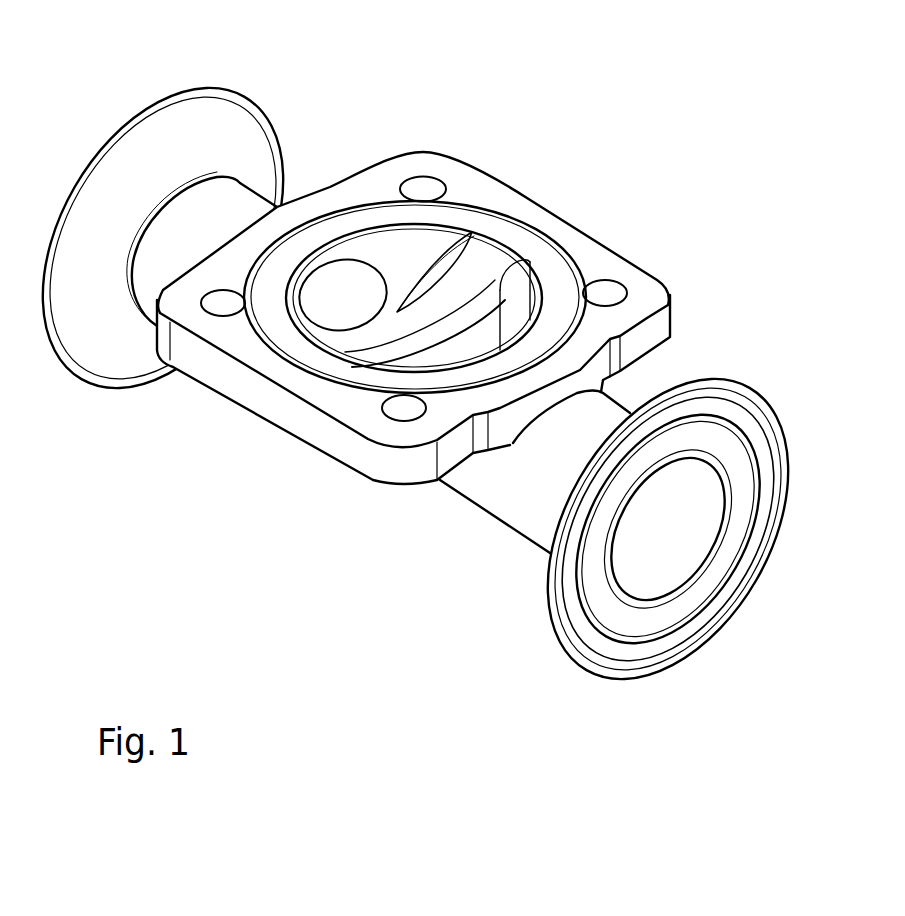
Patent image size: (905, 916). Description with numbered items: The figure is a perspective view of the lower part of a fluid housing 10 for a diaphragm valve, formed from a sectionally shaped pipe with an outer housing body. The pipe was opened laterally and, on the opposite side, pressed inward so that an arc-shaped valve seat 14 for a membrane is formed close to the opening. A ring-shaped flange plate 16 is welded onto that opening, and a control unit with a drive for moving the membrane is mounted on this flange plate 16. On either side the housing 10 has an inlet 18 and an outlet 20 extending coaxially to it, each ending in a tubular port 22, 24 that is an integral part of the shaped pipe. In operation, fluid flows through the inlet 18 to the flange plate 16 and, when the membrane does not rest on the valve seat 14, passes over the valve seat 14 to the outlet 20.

The fluid housing 10 is at (630, 233).
The valve seat 14 is at (490, 262).
The flange plate 16 is at (368, 408).
The inlet 18 is at (207, 224).
The outlet 20 is at (593, 427).
The tubular port 22 is at (152, 290).
The tubular port 24 is at (520, 507).